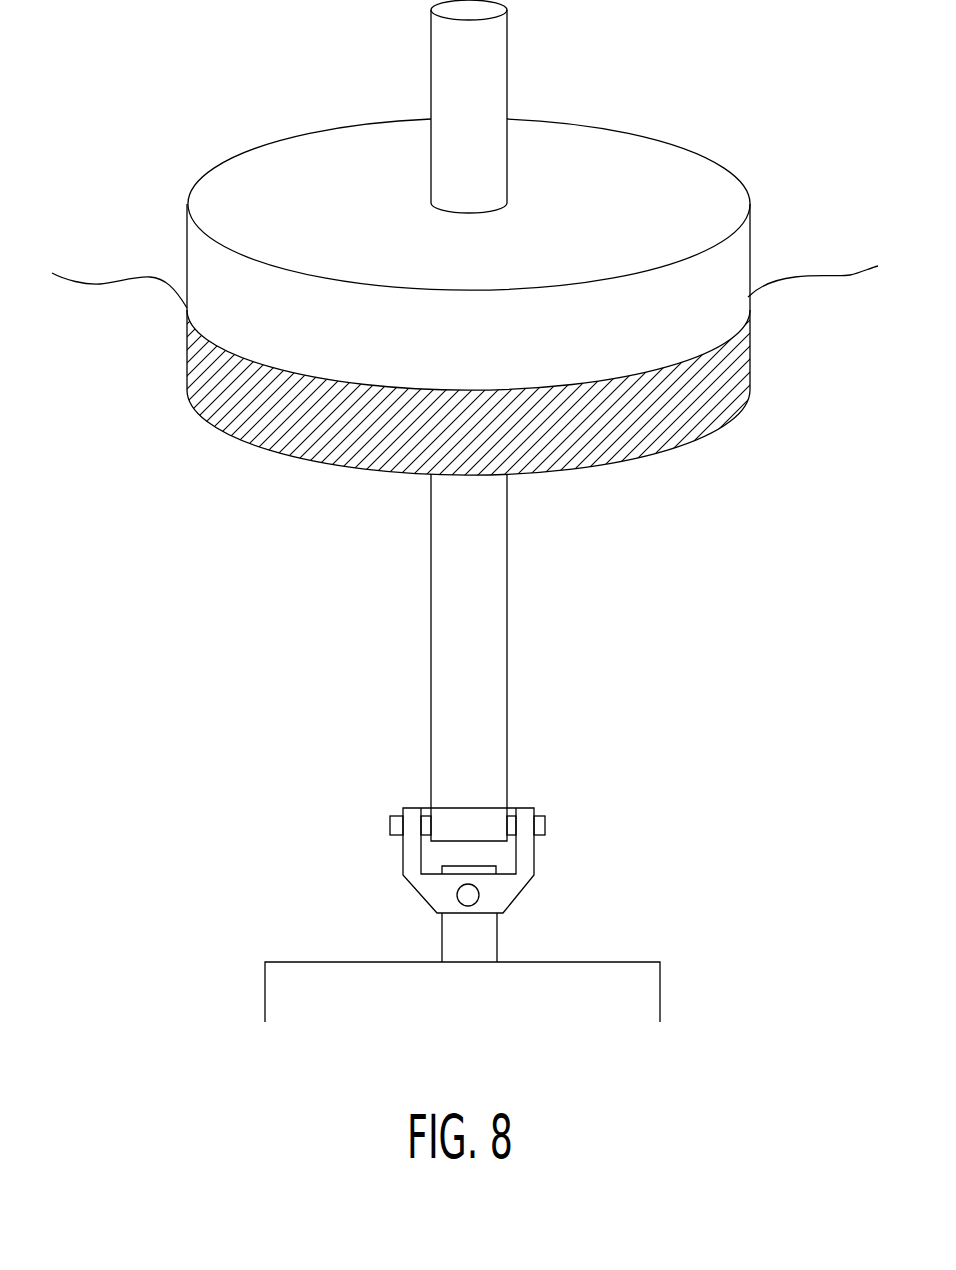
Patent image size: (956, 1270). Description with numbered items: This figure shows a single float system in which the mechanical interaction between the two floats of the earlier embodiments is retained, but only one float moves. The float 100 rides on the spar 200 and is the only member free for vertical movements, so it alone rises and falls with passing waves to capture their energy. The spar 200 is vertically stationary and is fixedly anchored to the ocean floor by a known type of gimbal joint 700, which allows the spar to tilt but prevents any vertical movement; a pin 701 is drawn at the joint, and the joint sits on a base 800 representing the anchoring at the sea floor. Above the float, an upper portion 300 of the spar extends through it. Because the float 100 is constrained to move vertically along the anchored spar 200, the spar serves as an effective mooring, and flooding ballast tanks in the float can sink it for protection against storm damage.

The float 100 is at (717, 190).
The spar float 200 is at (485, 663).
The upper shaft 300 is at (500, 35).
The gimbal joint 700 is at (527, 858).
The pin 701 is at (458, 897).
The base 800 is at (628, 1002).